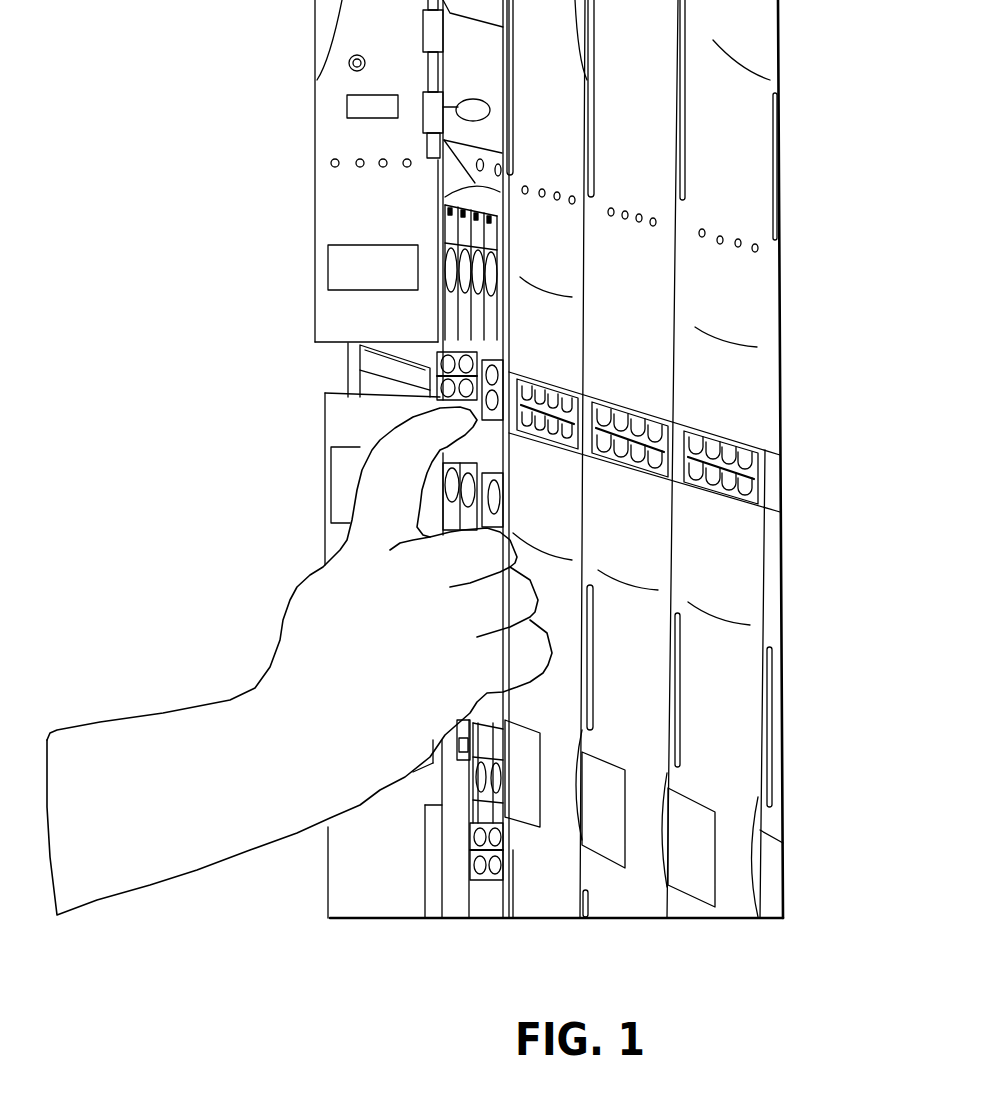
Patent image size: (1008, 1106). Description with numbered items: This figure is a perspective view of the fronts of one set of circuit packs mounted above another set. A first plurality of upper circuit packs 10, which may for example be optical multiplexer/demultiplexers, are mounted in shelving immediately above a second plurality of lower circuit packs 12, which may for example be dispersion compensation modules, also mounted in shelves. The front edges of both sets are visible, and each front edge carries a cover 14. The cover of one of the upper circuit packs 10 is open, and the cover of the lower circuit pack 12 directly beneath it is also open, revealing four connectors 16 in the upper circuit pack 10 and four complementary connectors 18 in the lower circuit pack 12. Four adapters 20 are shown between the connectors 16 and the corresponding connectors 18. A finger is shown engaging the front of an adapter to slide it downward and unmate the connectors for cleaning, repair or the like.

The upper circuit packs 10 is at (742, 306).
The lower circuit packs 12 is at (734, 582).
The cover 14 is at (352, 207).
The connectors 16 is at (477, 280).
The complementary connectors 18 is at (463, 483).
The adapters 20 is at (455, 343).